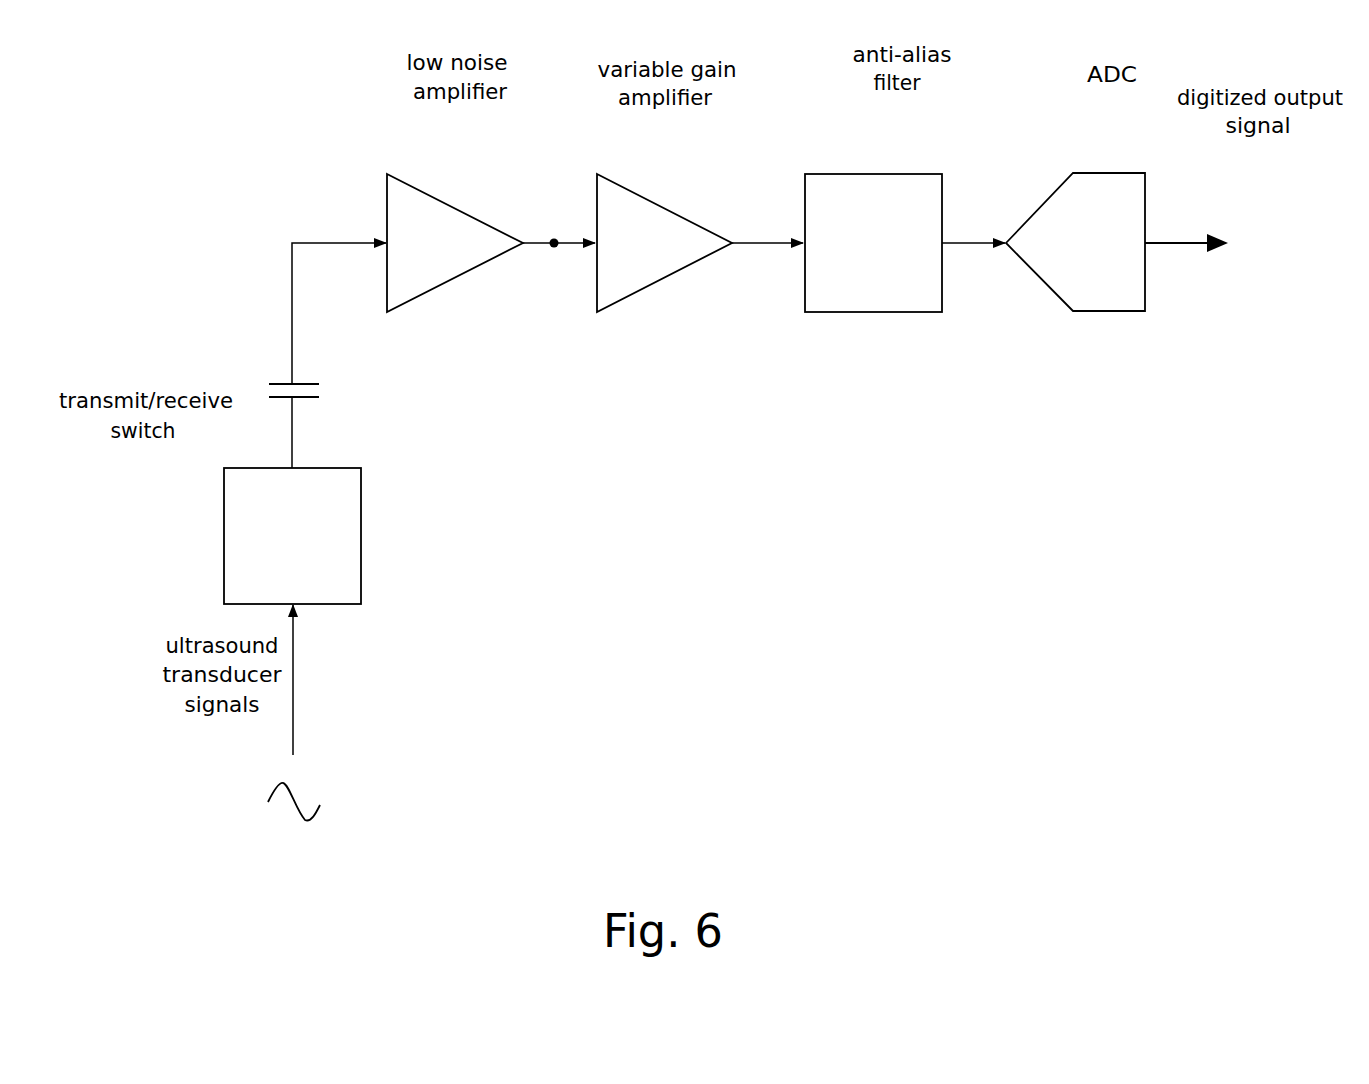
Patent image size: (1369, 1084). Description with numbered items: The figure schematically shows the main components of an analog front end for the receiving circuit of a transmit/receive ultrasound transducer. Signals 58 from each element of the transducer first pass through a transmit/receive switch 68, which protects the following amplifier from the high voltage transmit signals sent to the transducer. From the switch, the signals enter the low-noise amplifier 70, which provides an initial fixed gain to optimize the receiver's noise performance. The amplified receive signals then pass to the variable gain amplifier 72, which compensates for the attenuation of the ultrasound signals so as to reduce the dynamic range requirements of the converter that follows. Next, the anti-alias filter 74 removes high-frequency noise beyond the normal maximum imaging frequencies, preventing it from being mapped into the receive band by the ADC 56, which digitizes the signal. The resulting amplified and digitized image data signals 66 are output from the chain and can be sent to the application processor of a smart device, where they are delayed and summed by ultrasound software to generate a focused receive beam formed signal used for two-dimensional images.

The ADC 56 is at (1094, 173).
The signals 58 is at (276, 778).
The amplified and digitized image data signals 66 is at (1178, 230).
The transmit/receive switch 68 is at (223, 503).
The low-noise amplifier 70 is at (432, 197).
The variable gain amplifier 72 is at (650, 203).
The anti-alias filter 74 is at (867, 174).